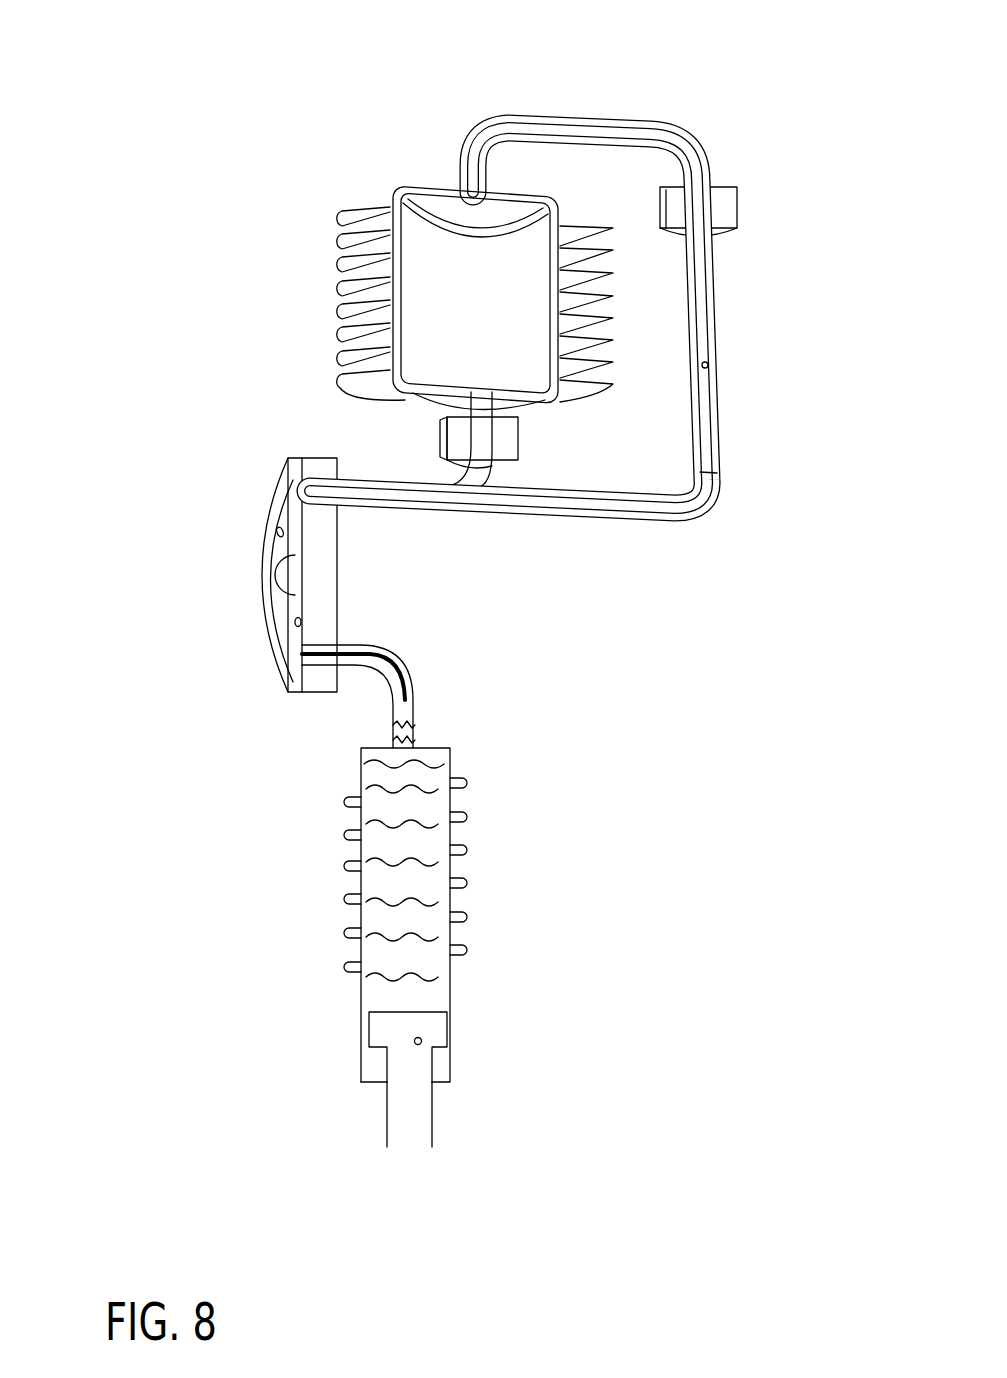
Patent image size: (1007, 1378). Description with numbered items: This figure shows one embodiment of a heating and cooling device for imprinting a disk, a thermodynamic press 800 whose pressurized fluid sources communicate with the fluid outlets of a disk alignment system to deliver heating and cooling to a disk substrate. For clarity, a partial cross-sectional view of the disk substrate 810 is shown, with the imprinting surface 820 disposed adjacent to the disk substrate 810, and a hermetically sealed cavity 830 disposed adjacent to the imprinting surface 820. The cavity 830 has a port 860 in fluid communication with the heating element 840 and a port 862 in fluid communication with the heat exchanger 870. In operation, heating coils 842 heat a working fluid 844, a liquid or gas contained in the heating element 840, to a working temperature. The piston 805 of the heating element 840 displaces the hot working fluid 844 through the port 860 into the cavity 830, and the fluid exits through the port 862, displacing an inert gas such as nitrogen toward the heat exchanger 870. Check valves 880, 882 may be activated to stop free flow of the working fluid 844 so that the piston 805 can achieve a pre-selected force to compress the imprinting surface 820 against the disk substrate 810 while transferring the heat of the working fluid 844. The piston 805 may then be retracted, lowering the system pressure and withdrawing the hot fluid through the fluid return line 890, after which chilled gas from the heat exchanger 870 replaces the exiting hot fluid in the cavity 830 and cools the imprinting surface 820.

The thermodynamic press 800 is at (748, 88).
The piston 805 is at (421, 1040).
The disk substrate 810 is at (281, 580).
The imprinting surface 820 is at (290, 608).
The hermetically sealed cavity 830 is at (295, 623).
The heating element 840 is at (287, 800).
The heating coils 842 is at (456, 780).
The working fluid 844 is at (437, 797).
The port 860 is at (387, 668).
The port 862 is at (395, 478).
The heat exchanger 870 is at (260, 198).
The check valve 880 is at (513, 442).
The check valve 882 is at (727, 205).
The fluid return line 890 is at (708, 363).